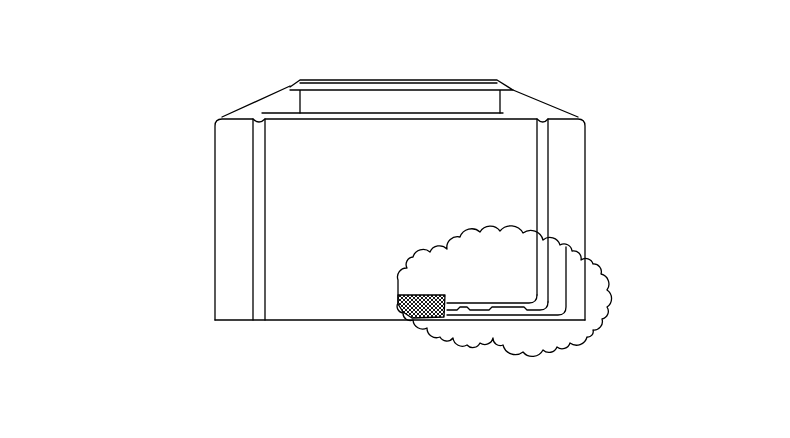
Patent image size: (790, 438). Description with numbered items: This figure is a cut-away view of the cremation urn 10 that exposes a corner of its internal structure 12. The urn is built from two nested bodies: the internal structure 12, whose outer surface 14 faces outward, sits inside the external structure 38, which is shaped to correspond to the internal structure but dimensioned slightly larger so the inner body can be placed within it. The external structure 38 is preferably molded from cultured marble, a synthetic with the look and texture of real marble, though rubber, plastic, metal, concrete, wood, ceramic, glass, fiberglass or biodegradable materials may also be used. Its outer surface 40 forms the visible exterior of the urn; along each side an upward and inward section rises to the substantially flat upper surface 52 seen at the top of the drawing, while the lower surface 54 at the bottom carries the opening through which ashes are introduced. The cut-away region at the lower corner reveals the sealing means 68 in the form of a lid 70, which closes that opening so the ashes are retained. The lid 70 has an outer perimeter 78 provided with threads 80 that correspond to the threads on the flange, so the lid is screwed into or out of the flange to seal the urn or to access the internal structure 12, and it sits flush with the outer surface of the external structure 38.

The cremation urn 10 is at (103, 108).
The internal structure 12 is at (579, 269).
The outer surface 14 is at (522, 262).
The external structure 38 is at (448, 181).
The outer surface 40 is at (497, 148).
The upper surface 52 is at (400, 78).
The lower surface 54 is at (293, 320).
The sealing means 68 is at (563, 356).
The lid 70 is at (448, 306).
The outer perimeter 78 is at (327, 353).
The threads 80 is at (402, 306).